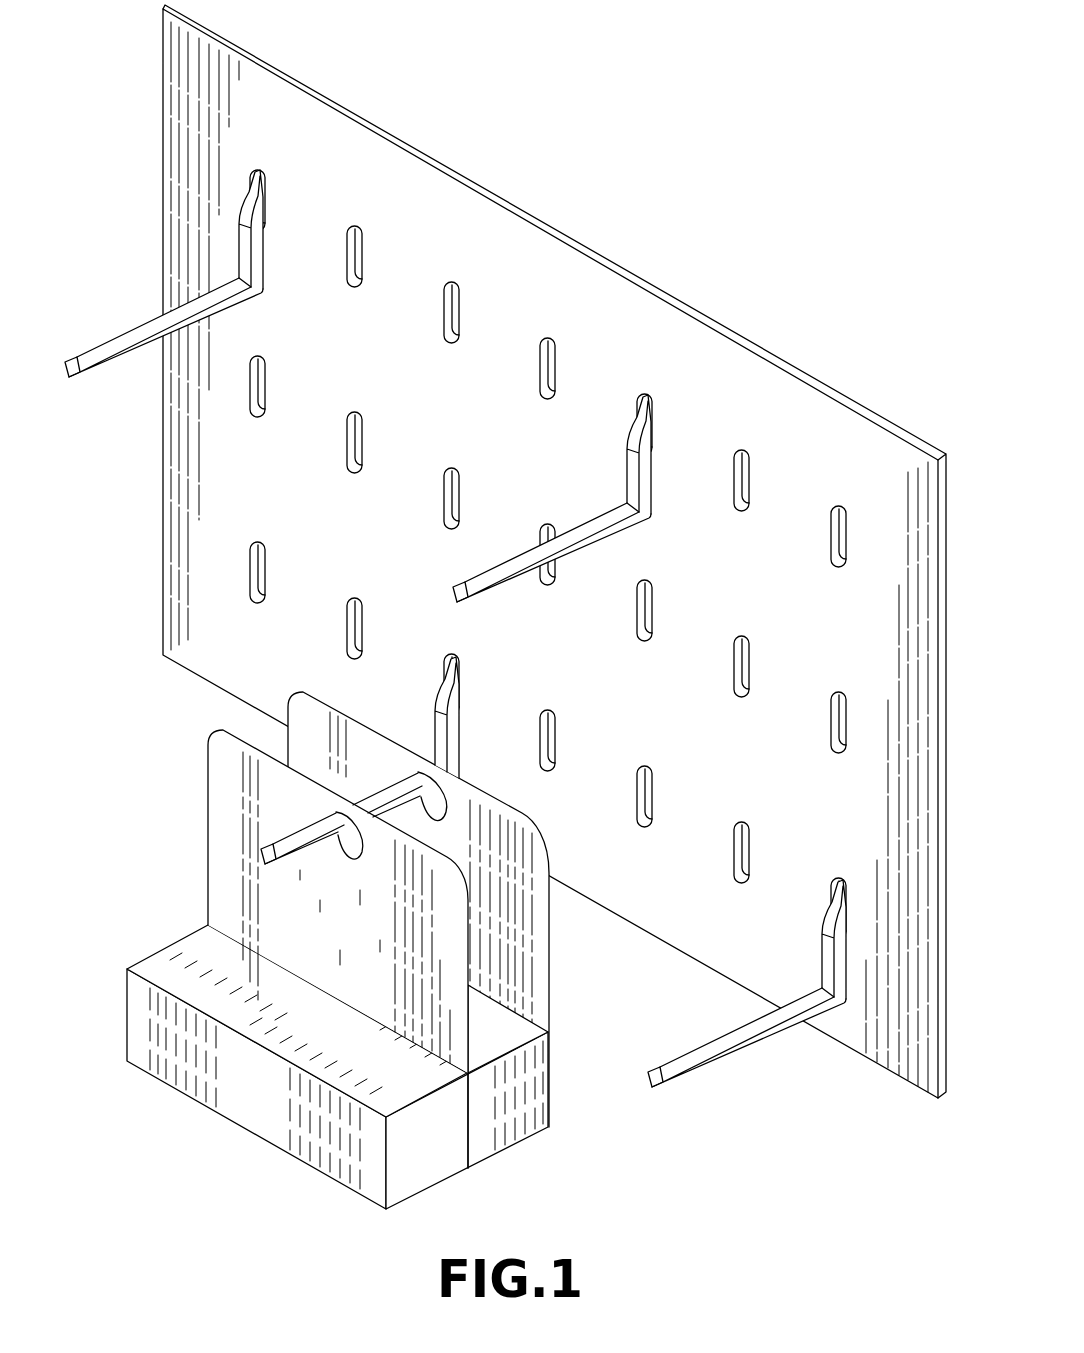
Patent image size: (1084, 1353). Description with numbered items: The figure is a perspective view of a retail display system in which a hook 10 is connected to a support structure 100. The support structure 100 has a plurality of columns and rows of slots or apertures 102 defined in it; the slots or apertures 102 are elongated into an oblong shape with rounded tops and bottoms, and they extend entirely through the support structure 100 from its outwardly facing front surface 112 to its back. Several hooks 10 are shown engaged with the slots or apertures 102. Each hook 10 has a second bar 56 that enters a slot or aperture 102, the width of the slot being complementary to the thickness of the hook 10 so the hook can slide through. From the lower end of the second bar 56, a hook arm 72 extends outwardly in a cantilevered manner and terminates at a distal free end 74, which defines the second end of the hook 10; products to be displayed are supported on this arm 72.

The hook 10 is at (444, 669).
The second bar 56 is at (240, 253).
The hook arm 72 is at (130, 353).
The distal free end 74 is at (456, 590).
The support structure 100 is at (554, 551).
The slots or apertures 102 is at (348, 240).
The front surface 112 is at (770, 580).